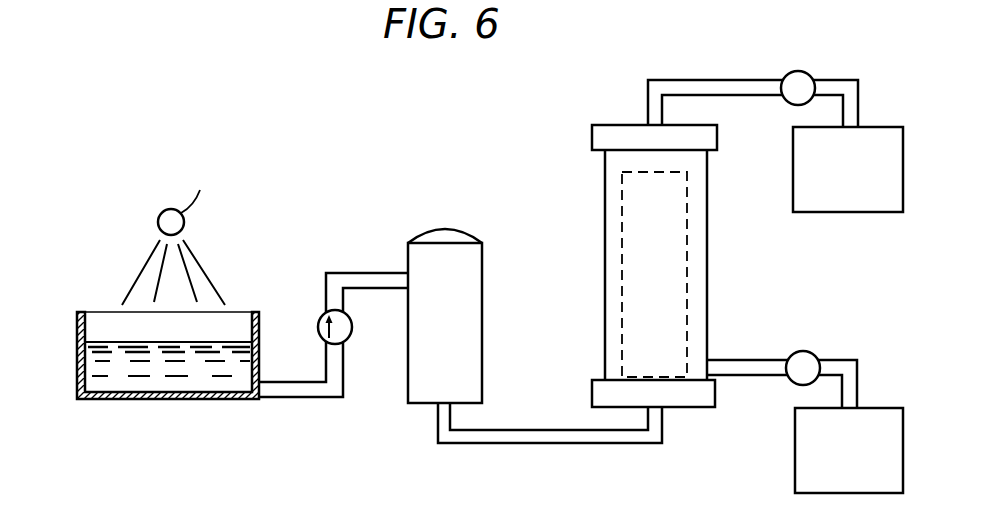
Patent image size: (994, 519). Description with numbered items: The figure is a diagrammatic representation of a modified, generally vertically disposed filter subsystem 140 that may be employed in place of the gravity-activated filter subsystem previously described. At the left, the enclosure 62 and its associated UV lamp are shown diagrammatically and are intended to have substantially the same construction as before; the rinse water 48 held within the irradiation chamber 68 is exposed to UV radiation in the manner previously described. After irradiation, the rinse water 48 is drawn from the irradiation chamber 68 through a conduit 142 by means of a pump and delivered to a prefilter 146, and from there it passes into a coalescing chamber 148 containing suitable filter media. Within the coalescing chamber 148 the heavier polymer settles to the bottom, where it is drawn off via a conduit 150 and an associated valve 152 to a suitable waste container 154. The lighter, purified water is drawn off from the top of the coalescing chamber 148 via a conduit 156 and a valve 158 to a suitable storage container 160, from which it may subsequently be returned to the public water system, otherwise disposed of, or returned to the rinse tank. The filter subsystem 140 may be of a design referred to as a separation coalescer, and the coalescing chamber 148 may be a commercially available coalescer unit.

The filter subsystem 140 is at (383, 150).
The enclosure 62 is at (46, 349).
The irradiation chamber 68 is at (232, 312).
The rinse water 48 is at (135, 378).
The conduit 142 is at (362, 278).
The prefilter 146 is at (470, 316).
The coalescing chamber 148 is at (605, 192).
The conduit 150 is at (755, 358).
The valve 152 is at (812, 353).
The waste container 154 is at (862, 468).
The conduit 156 is at (705, 82).
The valve 158 is at (808, 76).
The storage container 160 is at (866, 187).